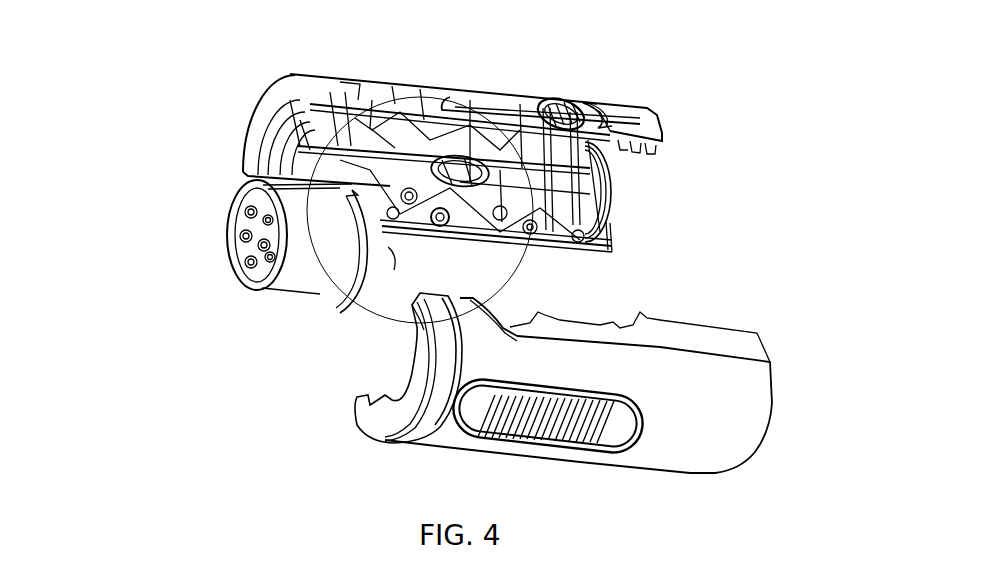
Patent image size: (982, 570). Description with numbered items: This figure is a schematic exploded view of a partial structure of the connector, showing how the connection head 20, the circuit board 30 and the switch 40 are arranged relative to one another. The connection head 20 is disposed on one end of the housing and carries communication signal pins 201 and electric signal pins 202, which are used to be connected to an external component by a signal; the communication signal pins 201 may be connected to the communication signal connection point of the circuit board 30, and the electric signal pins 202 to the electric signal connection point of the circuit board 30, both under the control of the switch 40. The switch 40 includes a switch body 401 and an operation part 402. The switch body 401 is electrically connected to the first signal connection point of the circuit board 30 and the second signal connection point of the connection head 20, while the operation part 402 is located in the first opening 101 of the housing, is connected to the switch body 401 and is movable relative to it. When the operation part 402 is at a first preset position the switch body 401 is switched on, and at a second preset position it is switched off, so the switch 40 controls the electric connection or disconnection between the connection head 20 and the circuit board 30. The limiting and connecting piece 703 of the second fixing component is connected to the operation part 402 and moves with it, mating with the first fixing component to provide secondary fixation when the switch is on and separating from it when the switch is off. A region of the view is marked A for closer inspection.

The detail region A is at (420, 98).
The first opening 101 is at (490, 100).
The limiting and connecting piece 703 is at (550, 100).
The operation part 402 is at (650, 113).
The switch body 401 is at (613, 237).
The switch 40 is at (532, 163).
The connection head 20 is at (244, 246).
The electric signal pins 202 is at (240, 203).
The communication signal pins 201 is at (232, 262).
The circuit board 30 is at (508, 252).